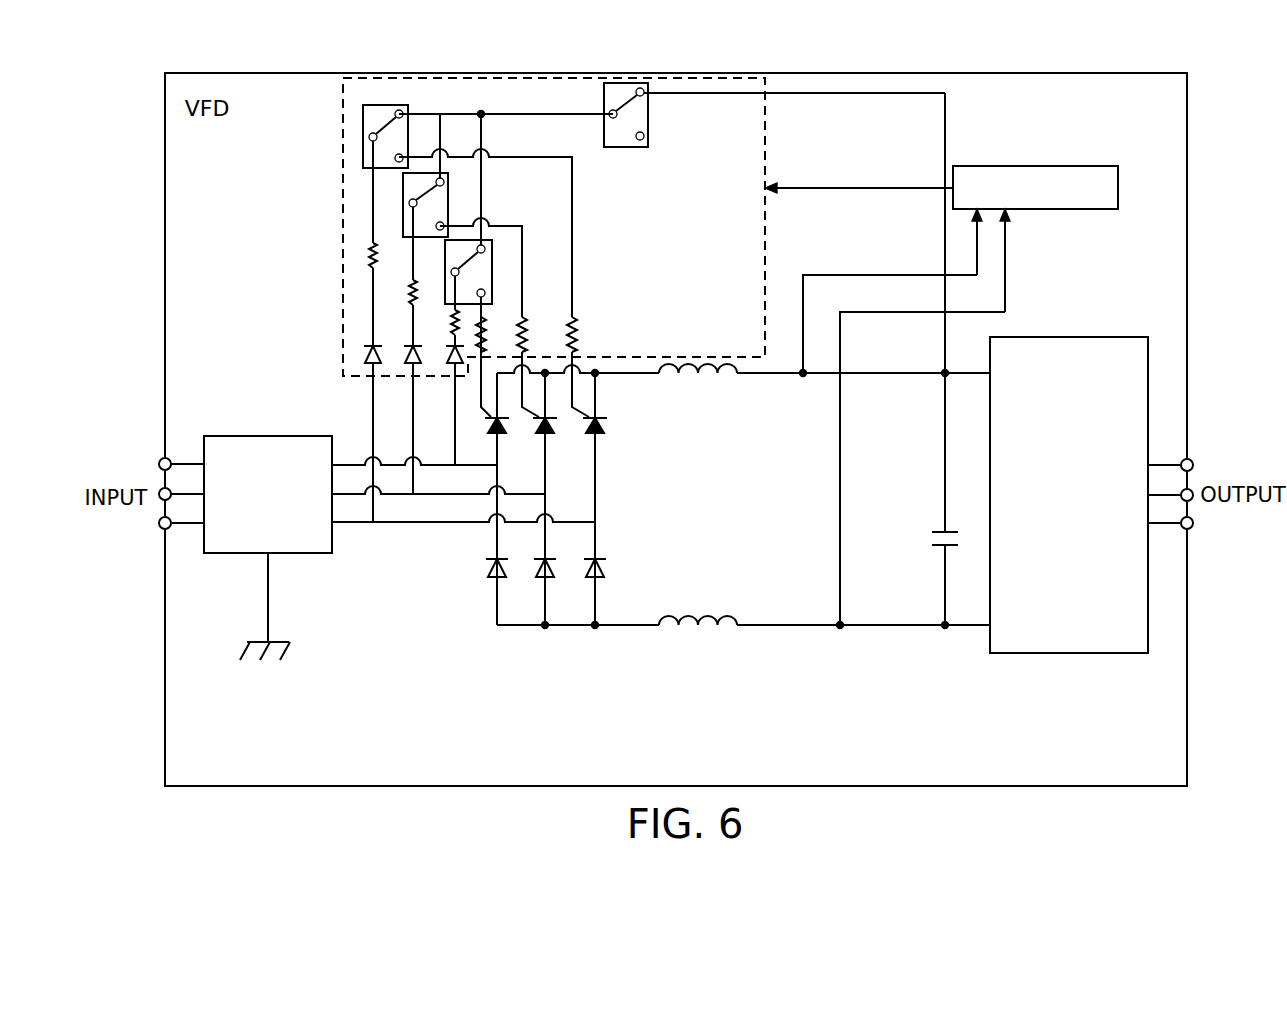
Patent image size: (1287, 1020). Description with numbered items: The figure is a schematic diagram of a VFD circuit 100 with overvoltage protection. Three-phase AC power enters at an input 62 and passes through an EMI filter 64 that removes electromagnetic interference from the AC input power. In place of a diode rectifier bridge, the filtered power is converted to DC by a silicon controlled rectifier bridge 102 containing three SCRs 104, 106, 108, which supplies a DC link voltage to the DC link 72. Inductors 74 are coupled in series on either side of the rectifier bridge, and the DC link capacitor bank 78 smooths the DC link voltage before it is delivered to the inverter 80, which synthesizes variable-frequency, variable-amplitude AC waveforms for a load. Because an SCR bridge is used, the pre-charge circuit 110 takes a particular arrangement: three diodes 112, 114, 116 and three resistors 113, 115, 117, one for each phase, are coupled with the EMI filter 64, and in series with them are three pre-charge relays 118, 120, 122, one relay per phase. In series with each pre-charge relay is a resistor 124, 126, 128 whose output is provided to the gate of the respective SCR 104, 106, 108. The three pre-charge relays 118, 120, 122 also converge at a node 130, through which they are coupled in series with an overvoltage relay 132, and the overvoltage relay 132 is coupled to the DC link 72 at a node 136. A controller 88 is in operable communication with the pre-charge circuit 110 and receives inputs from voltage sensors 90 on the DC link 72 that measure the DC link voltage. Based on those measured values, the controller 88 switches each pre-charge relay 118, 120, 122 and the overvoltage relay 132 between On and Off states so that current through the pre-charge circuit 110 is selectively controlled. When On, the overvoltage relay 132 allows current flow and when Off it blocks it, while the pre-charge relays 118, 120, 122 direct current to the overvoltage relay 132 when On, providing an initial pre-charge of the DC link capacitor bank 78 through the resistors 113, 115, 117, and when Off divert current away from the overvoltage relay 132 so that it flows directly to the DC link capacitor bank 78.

The VFD circuit 100 is at (812, 74).
The pre-charge circuit 110 is at (539, 79).
The pre-charge relay 118 is at (363, 120).
The pre-charge relay 120 is at (423, 172).
The pre-charge relay 122 is at (486, 247).
The node 130 is at (482, 109).
The overvoltage relay 132 is at (618, 148).
The controller 88 is at (1070, 166).
The inverter 80 is at (1020, 337).
The node 136 is at (942, 370).
The DC link capacitor bank 78 is at (957, 536).
The voltage sensors 90 is at (808, 378).
The DC link 72 is at (758, 374).
The inductors 74 is at (683, 375).
The silicon controlled rectifier bridge 102 is at (617, 537).
The SCR 104 is at (507, 425).
The SCR 106 is at (553, 425).
The SCR 108 is at (603, 425).
The diode 112 is at (363, 347).
The diode 114 is at (407, 360).
The diode 116 is at (449, 359).
The resistor 113 is at (370, 258).
The resistor 115 is at (408, 300).
The resistor 117 is at (450, 335).
The resistor 124 is at (490, 318).
The resistor 126 is at (526, 320).
The resistor 128 is at (575, 331).
The electromagnetic interference filter 64 is at (218, 436).
The input 62 is at (149, 525).